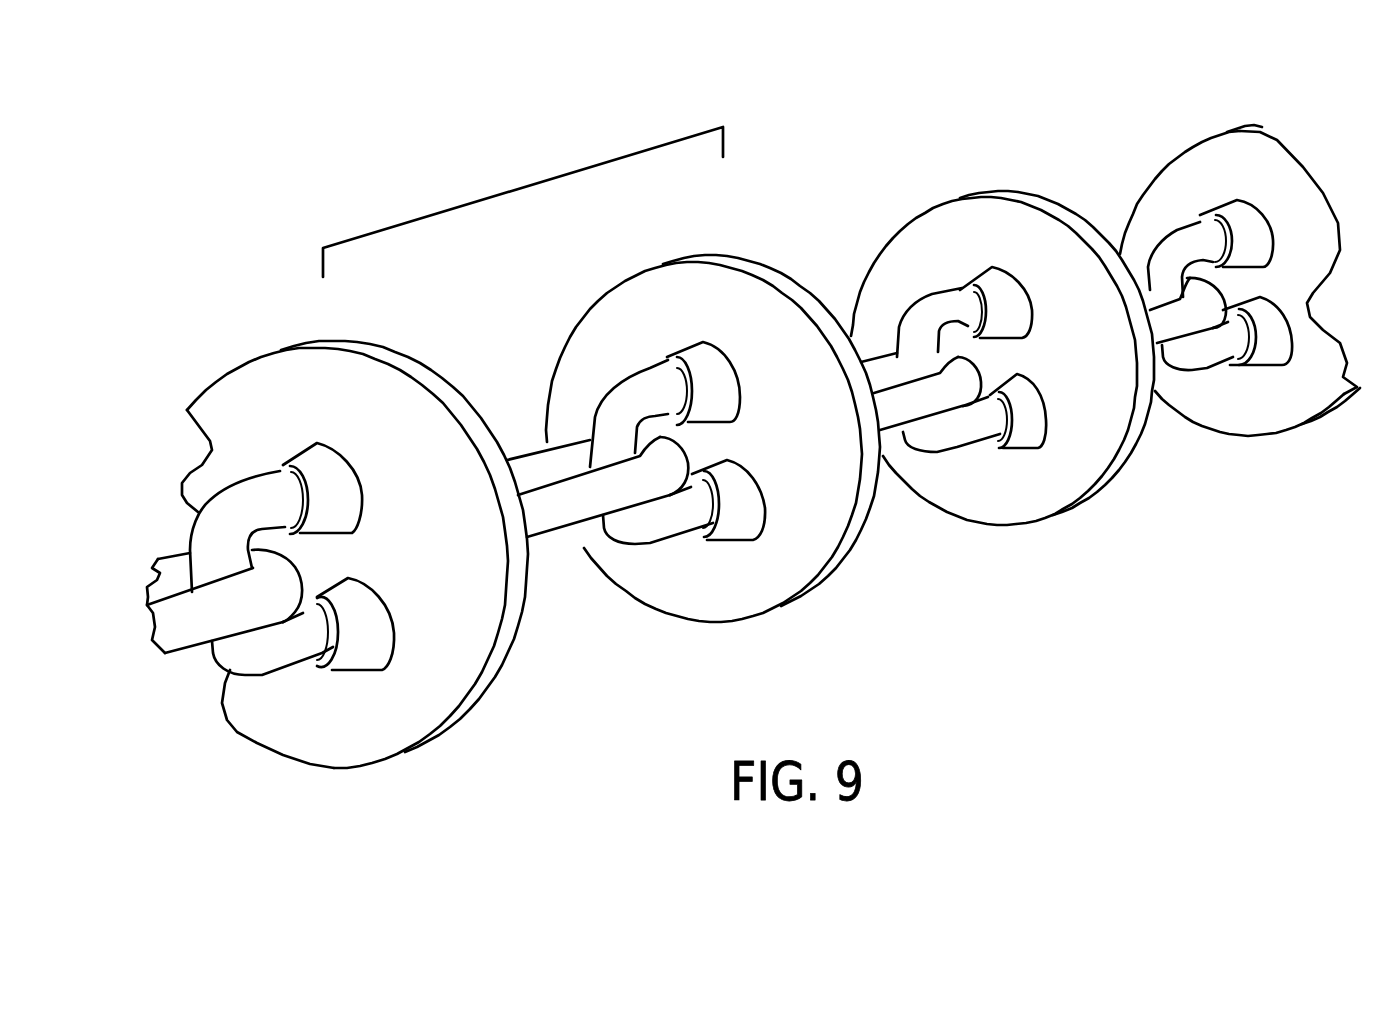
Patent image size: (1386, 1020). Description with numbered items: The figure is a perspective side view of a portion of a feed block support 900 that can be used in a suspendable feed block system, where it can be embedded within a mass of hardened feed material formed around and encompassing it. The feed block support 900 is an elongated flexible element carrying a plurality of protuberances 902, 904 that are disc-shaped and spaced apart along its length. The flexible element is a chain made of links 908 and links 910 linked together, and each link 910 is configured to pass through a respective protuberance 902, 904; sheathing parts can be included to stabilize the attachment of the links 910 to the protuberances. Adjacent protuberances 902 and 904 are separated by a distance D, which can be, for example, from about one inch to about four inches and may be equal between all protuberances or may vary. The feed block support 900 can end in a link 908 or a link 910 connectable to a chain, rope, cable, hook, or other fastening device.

The feed block support 900 is at (753, 446).
The protuberance 902 is at (713, 485).
The protuberance 904 is at (499, 668).
The link 908 is at (523, 467).
The link 910 is at (632, 390).
The distance D is at (503, 192).